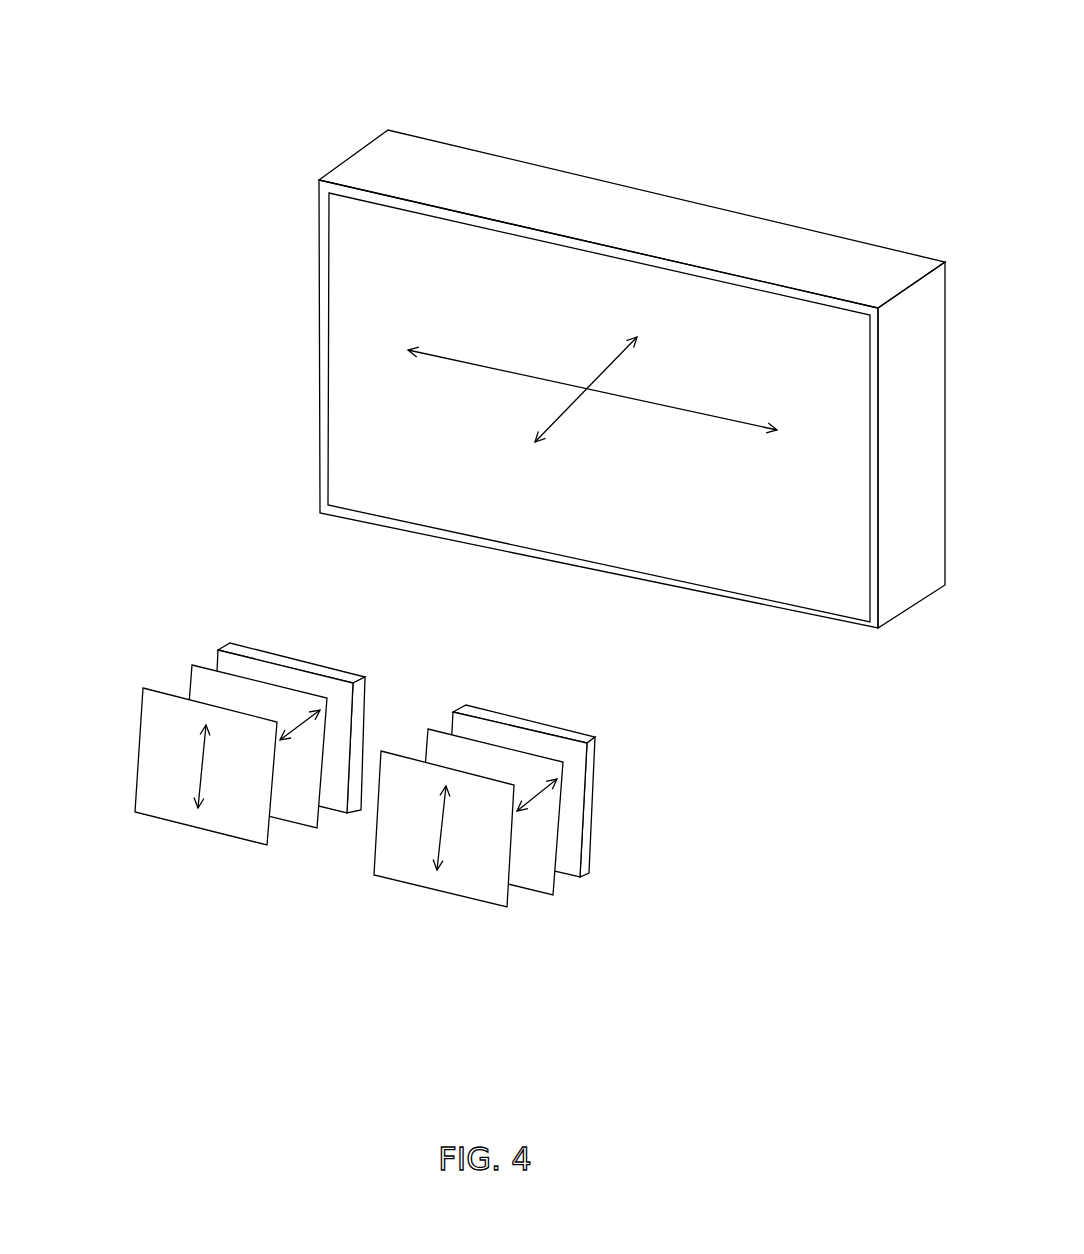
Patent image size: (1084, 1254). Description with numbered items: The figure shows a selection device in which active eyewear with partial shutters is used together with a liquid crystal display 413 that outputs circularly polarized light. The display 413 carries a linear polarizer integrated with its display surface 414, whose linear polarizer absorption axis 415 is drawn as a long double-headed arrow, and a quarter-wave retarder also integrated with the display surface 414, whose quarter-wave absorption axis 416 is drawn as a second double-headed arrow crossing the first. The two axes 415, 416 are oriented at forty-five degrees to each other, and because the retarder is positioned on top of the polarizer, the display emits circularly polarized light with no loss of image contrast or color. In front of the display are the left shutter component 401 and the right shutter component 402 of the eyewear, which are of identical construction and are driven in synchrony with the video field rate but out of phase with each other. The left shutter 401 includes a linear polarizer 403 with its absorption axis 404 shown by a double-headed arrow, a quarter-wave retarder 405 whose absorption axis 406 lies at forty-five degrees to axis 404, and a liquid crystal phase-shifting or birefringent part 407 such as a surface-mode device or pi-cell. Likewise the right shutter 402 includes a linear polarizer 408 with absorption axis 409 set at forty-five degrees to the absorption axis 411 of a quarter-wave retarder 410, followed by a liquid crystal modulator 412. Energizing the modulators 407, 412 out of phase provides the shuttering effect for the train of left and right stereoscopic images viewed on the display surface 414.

The left shutter component 401 is at (216, 760).
The right shutter component 402 is at (594, 842).
The linear polarizer 403 is at (180, 821).
The absorption axis 404 is at (208, 770).
The quarter-wave retarder 405 is at (287, 773).
The absorption axis 406 is at (297, 722).
The liquid crystal phase-shifting or birefringent part 407 is at (252, 635).
The linear polarizer 408 is at (438, 914).
The absorption axis 409 is at (449, 842).
The quarter-wave retarder 410 is at (503, 824).
The absorption axis 411 is at (532, 792).
The liquid crystal modulator 412 is at (583, 727).
The liquid crystal display 413 is at (632, 398).
The display surface 414 is at (632, 398).
The linear polarizer absorption axis 415 is at (492, 358).
The quarter-wave absorption axis 416 is at (602, 357).